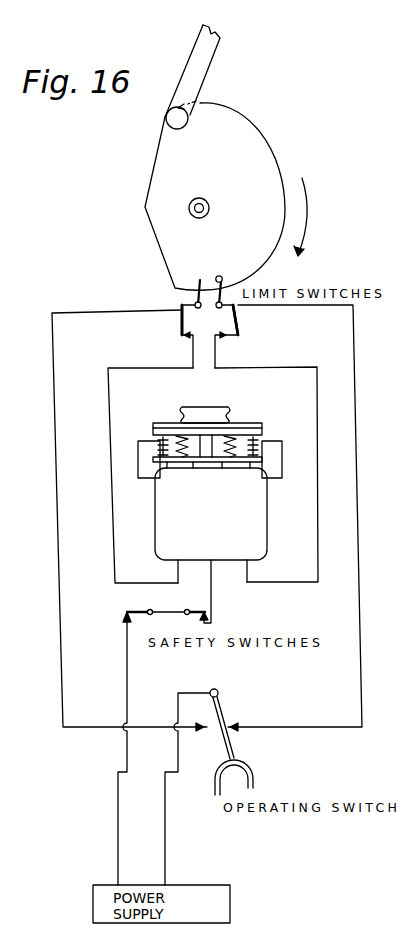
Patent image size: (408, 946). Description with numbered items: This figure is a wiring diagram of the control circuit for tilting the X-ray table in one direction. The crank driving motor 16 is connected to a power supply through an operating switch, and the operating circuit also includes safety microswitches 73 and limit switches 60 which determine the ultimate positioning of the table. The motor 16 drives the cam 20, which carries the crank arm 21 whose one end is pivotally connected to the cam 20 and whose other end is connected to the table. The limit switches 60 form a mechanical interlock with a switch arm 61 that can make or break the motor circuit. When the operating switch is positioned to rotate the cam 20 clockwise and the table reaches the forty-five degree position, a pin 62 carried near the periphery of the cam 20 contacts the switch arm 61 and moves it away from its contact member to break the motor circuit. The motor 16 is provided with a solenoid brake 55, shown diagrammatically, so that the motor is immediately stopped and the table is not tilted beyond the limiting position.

The crank driving motor 16 is at (268, 509).
The cam 20 is at (145, 199).
The crank arm 21 is at (224, 73).
The solenoid brake 55 is at (271, 436).
The limit switches 60 is at (232, 321).
The switch arm 61 is at (253, 333).
The pin 62 is at (223, 275).
The safety microswitches 73 is at (192, 606).